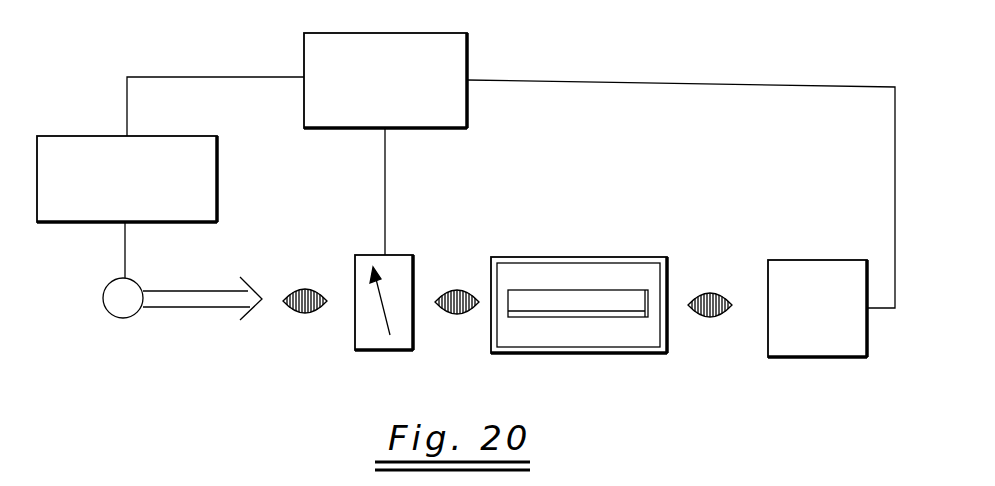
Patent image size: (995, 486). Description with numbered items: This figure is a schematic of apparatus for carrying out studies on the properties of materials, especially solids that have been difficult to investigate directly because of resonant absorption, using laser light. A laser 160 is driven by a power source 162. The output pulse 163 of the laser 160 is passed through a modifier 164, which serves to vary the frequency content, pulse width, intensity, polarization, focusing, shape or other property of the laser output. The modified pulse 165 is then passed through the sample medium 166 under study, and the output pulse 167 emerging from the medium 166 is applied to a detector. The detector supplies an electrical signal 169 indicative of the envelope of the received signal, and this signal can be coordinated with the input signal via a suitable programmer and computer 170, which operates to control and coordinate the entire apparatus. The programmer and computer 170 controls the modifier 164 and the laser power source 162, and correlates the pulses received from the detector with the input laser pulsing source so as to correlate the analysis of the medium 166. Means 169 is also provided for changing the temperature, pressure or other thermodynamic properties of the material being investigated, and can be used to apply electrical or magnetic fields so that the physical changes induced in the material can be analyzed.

The laser 160 is at (179, 302).
The laser power source 162 is at (217, 169).
The output pulse of laser 163 is at (303, 314).
The modifier 164 is at (402, 265).
The modified pulse 165 is at (459, 315).
The sample medium 166 is at (619, 298).
The output pulse from medium 167 is at (712, 318).
The electrical signal / means 169 is at (819, 265).
The programmer and computer 170 is at (467, 105).